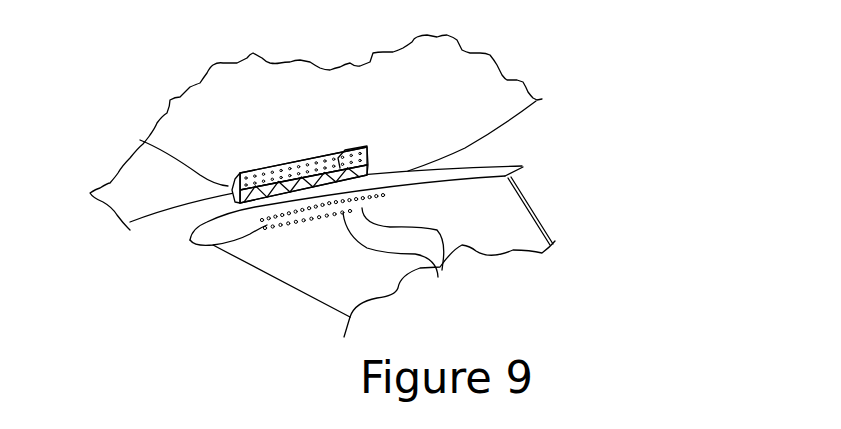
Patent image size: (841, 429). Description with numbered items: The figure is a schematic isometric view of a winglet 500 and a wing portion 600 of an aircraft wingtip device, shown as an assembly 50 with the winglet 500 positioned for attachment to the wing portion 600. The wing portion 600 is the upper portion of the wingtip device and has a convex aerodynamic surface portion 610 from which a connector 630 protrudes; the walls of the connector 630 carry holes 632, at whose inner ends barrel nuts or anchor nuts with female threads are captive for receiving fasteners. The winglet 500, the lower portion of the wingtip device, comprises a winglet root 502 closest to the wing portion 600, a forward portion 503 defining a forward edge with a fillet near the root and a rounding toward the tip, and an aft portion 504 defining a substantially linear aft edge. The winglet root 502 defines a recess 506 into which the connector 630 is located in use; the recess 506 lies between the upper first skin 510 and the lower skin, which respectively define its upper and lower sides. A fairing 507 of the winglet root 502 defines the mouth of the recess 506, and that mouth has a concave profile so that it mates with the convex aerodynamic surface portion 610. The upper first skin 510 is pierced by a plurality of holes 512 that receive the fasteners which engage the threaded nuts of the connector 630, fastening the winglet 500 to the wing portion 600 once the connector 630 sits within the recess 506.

The cover assembly 50 is at (586, 52).
The wing portion 600 is at (540, 115).
The connector 630 is at (143, 141).
The holes 632 is at (298, 165).
The convex aerodynamic surface portion 610 is at (152, 197).
The winglet 500 is at (572, 220).
The winglet root 502 is at (507, 165).
The fairing 507 is at (520, 179).
The aft portion 504 is at (558, 240).
The upper first skin 510 is at (350, 268).
The forward portion 503 is at (297, 272).
The holes 512 is at (441, 268).
The recess 506 is at (268, 243).